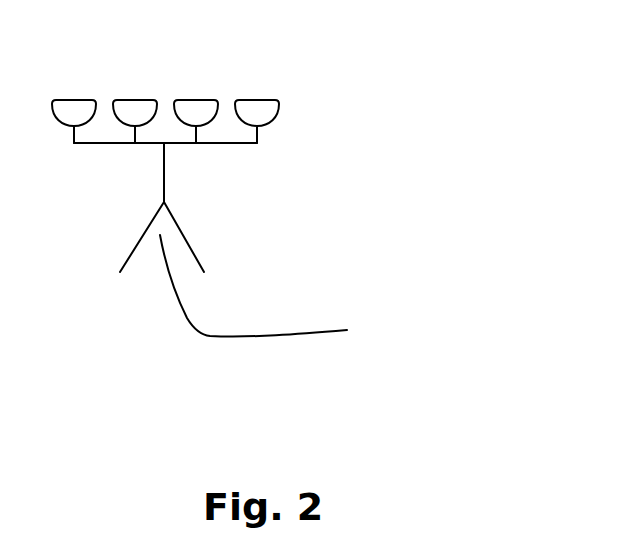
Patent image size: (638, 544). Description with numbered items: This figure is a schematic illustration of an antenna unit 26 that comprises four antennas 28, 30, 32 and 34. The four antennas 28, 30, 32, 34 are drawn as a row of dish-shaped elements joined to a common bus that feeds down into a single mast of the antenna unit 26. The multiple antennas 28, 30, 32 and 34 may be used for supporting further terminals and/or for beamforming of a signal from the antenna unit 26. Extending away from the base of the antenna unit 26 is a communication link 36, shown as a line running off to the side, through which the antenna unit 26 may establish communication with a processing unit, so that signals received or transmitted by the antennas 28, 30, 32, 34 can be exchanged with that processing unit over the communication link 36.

The antenna unit 26 is at (96, 223).
The antenna 28 is at (74, 101).
The antenna 30 is at (135, 101).
The antenna 32 is at (196, 101).
The antenna 34 is at (257, 101).
The communication link 36 is at (210, 337).